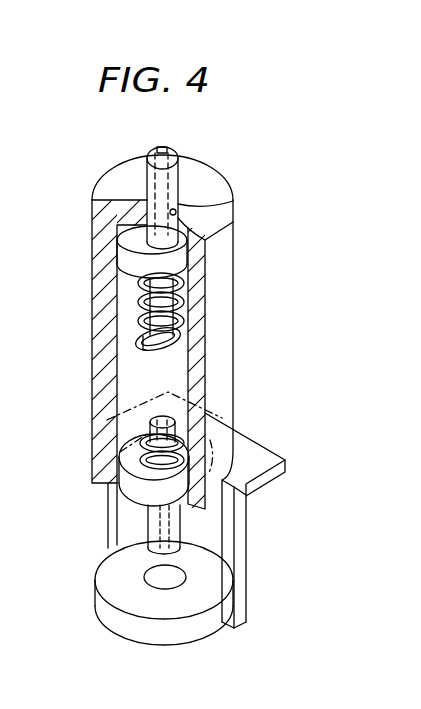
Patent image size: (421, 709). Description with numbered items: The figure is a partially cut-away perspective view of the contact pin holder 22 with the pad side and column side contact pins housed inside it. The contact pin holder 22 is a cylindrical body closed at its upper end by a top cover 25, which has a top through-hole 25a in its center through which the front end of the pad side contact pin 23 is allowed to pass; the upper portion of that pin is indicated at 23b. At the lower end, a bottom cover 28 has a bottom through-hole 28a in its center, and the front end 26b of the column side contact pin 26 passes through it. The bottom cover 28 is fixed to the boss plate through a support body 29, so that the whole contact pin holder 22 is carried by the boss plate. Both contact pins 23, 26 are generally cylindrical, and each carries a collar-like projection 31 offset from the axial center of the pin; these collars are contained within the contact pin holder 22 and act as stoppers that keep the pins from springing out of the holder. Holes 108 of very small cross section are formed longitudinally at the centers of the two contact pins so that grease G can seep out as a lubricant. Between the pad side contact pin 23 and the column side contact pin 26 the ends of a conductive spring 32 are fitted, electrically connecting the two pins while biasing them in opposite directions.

The contact pin holder 22 is at (220, 332).
The pad side contact pin 23 is at (147, 183).
The shaft upper portion 23b is at (177, 187).
The top cover 25 is at (203, 175).
The top through-hole 25a is at (178, 204).
The holes 108 is at (163, 147).
The collar-like projections 31 is at (173, 263).
The conductive spring 32 is at (155, 350).
The grease G is at (122, 396).
The support body 29 is at (260, 453).
The column side contact pin 26 is at (153, 525).
The front end of the column side contact pin 26b is at (175, 523).
The bottom cover 28 is at (98, 602).
The bottom through-hole 28a is at (150, 577).